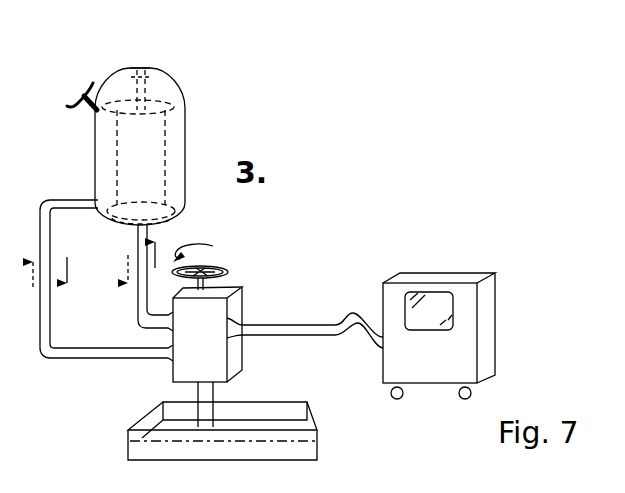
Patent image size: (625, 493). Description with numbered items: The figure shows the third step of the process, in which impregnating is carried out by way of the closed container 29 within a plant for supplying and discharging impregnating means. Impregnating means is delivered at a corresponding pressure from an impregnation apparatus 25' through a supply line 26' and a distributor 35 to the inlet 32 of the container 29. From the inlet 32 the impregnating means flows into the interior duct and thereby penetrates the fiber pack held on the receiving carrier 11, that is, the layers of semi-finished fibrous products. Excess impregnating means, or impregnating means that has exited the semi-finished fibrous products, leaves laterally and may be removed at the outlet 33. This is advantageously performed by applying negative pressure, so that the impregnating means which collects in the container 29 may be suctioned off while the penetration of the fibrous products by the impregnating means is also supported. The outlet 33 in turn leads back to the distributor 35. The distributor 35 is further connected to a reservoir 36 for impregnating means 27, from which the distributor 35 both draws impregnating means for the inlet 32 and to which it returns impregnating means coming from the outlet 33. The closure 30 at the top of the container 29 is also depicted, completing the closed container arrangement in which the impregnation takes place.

The closure / top opening of the vessel 30 is at (145, 65).
The receiving carrier 11 is at (157, 150).
The outlet 33 is at (63, 200).
The container 29 is at (185, 202).
The inlet 32 is at (137, 238).
The distributor 35 is at (233, 286).
The supply line 26' is at (312, 309).
The impregnation apparatus 25' is at (447, 302).
The reservoir 36 is at (305, 410).
The impregnating means 27 is at (303, 445).